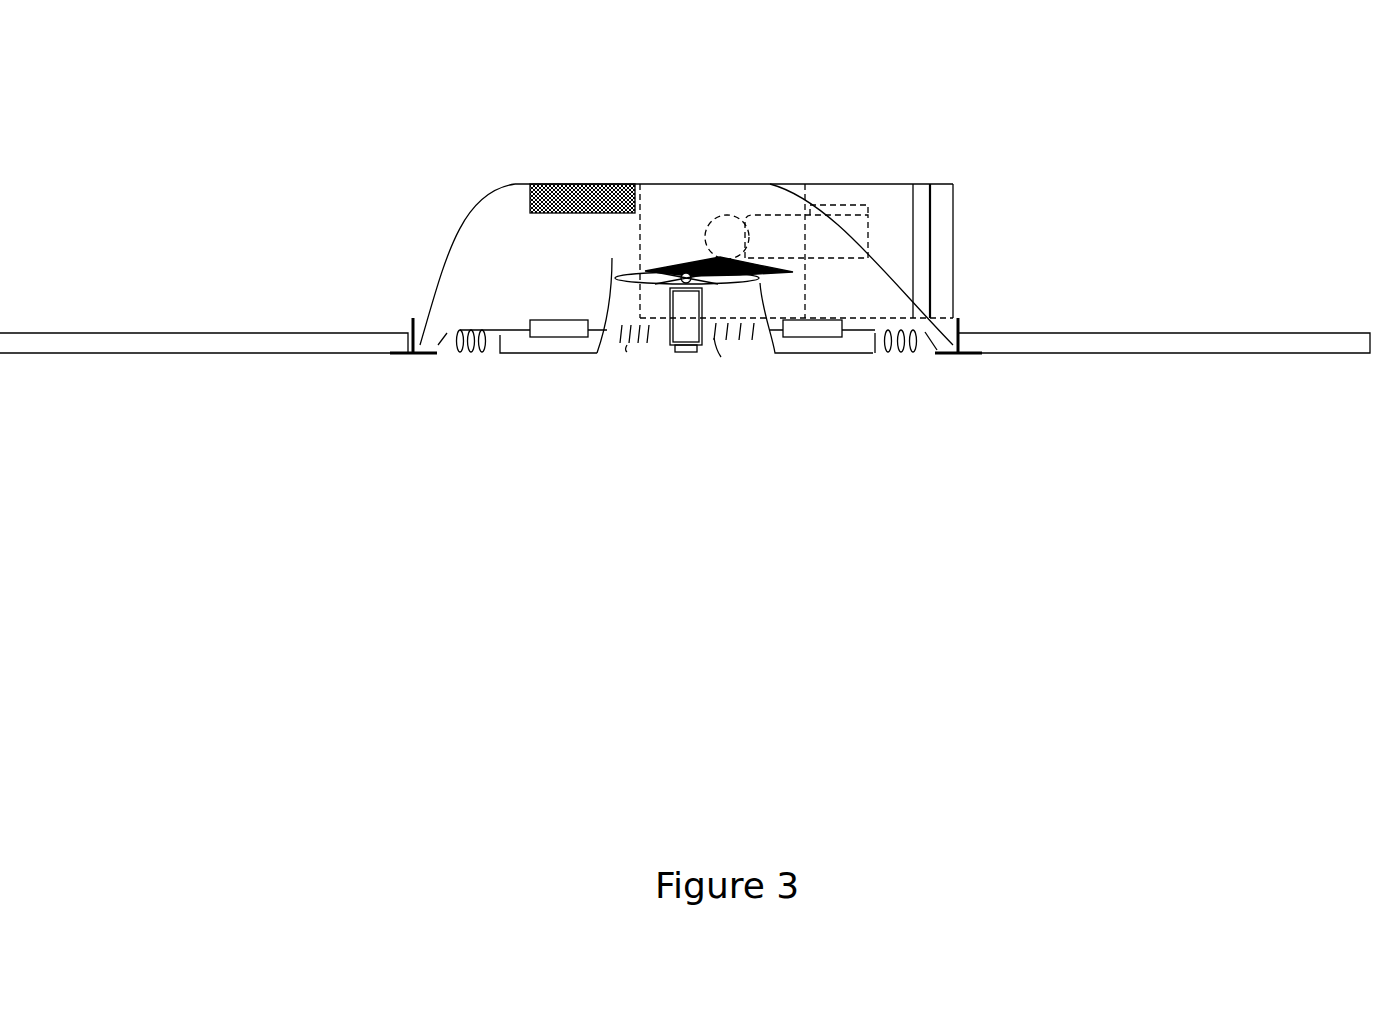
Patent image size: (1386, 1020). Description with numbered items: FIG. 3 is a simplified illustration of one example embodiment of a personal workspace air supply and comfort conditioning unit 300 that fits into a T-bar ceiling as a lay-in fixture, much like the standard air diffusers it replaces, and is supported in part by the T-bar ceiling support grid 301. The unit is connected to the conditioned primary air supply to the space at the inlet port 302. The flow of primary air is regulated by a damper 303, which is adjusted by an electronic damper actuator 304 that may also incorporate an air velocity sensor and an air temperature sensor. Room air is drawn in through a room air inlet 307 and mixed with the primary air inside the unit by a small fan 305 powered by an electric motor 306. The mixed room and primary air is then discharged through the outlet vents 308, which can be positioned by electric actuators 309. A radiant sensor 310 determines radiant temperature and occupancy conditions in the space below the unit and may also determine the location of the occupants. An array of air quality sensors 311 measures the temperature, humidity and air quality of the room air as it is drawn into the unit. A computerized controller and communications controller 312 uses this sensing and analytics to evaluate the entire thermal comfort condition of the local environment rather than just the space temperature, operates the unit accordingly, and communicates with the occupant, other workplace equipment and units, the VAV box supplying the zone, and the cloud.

The vehicle body / cowl 300 is at (477, 193).
The T-bar ceiling support grid 301 is at (413, 362).
The inlet port 302 is at (958, 205).
The damper 303 is at (700, 250).
The electronic damper actuator 304 is at (797, 214).
The fan 305 is at (600, 273).
The electric motor 306 is at (660, 302).
The room air inlet 307 is at (627, 352).
The outlet vents 308 is at (477, 357).
The electric actuators 309 is at (563, 343).
The radiant sensor 310 is at (684, 356).
The air quality sensors 311 is at (722, 343).
The computerized controller and communications controller 312 is at (545, 183).